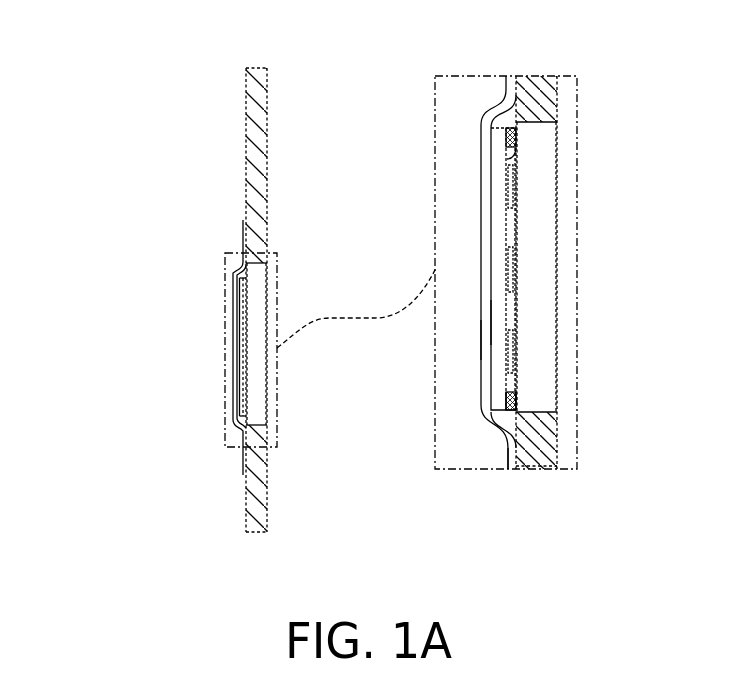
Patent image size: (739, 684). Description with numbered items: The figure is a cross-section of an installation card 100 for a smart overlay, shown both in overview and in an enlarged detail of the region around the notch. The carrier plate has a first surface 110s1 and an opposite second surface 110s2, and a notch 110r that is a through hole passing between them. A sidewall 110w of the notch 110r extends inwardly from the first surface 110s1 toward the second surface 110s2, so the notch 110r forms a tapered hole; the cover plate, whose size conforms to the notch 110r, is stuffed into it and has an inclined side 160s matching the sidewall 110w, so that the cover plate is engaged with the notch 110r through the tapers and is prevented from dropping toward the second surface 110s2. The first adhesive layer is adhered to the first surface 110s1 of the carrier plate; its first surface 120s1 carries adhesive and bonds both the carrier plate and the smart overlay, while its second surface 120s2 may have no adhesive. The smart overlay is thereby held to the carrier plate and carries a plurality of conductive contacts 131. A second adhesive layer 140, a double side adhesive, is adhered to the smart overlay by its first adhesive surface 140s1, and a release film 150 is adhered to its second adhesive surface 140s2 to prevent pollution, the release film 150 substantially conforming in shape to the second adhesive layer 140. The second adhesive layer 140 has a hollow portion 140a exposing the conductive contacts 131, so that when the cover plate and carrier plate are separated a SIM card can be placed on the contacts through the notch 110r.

The installation card 100 is at (100, 71).
The notch 110r is at (258, 281).
The first surface 110s1 is at (507, 455).
The second surface 110s2 is at (557, 462).
The sidewall 110w is at (527, 411).
The first surface 120s1 is at (491, 322).
The second surface 120s2 is at (481, 338).
The conductive contacts 131 is at (514, 198).
The second adhesive layer 140 is at (505, 132).
The hollow portion 140a is at (512, 161).
The first adhesive surface 140s1 is at (505, 402).
The second adhesive surface 140s2 is at (516, 408).
The release film 150 is at (517, 128).
The inclined side 160s is at (540, 467).